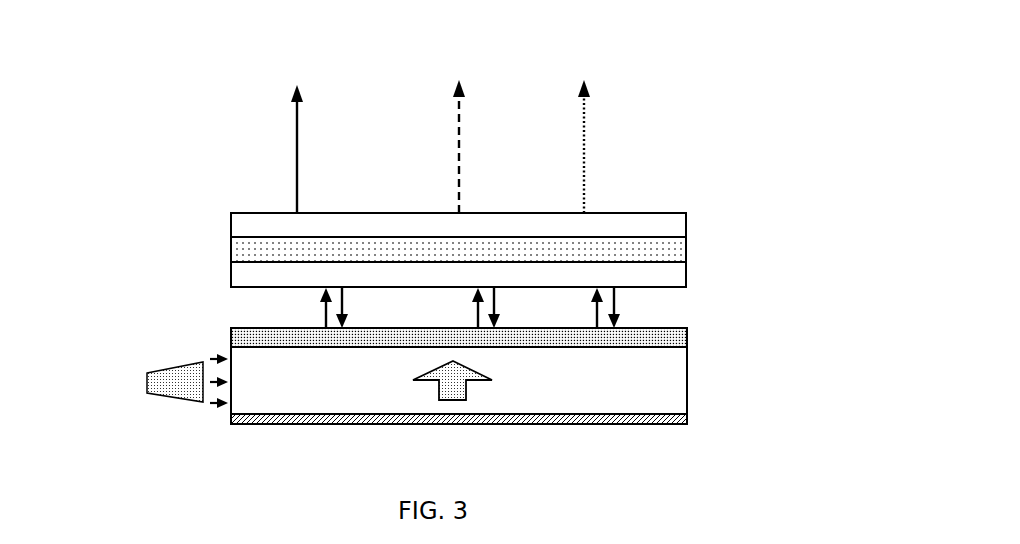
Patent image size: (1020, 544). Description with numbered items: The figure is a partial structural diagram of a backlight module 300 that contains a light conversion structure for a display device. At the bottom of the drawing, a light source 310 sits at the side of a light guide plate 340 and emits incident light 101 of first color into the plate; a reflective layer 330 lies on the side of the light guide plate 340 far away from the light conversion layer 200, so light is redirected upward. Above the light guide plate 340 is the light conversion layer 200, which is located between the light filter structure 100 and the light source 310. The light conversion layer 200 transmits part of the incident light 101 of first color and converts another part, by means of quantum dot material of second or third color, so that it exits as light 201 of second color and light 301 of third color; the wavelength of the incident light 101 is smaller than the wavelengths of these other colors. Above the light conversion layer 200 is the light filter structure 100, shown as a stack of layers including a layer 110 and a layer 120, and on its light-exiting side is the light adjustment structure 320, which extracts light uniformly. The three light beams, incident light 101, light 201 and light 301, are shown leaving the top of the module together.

The light filter structure 100 is at (755, 225).
The liquid crystal layer 110 is at (647, 244).
The lower substrate / polarizer 120 is at (655, 272).
The light adjustment structure 320 is at (647, 217).
The backlight module 300 is at (459, 222).
The light conversion layer 200 is at (659, 341).
The light guide plate 340 is at (658, 387).
The reflective layer 330 is at (659, 421).
The light source 310 is at (188, 375).
The incident light of first color 101 is at (117, 417).
The light of second color 201 is at (470, 190).
The light of third color 301 is at (585, 133).